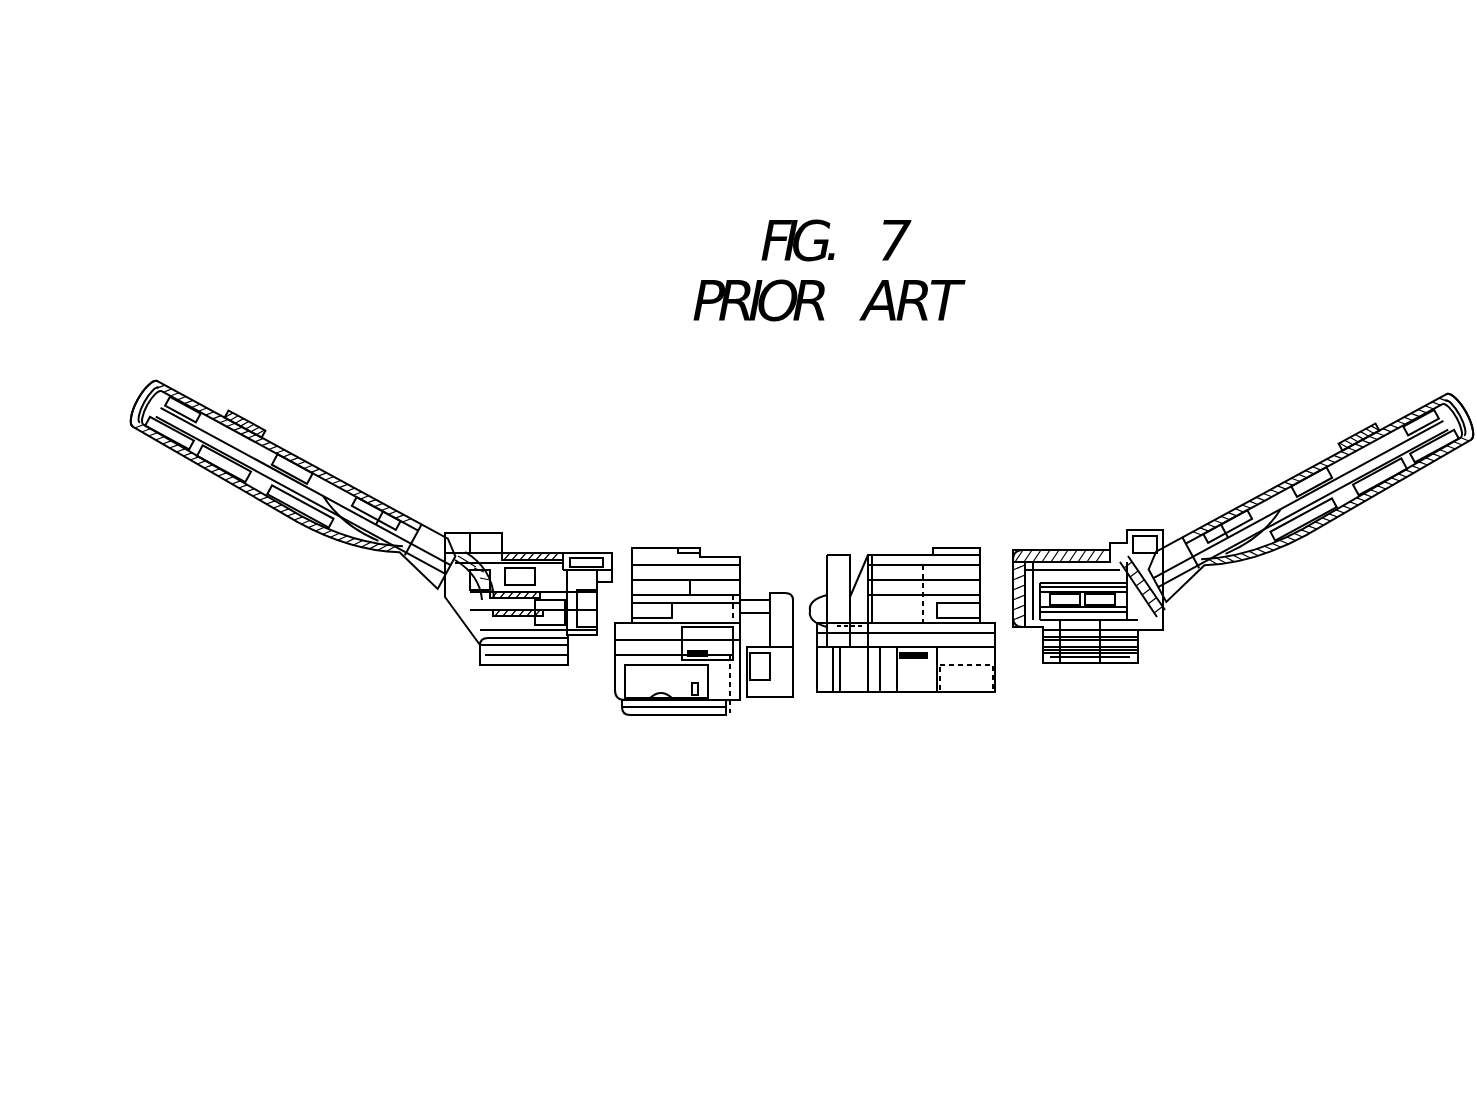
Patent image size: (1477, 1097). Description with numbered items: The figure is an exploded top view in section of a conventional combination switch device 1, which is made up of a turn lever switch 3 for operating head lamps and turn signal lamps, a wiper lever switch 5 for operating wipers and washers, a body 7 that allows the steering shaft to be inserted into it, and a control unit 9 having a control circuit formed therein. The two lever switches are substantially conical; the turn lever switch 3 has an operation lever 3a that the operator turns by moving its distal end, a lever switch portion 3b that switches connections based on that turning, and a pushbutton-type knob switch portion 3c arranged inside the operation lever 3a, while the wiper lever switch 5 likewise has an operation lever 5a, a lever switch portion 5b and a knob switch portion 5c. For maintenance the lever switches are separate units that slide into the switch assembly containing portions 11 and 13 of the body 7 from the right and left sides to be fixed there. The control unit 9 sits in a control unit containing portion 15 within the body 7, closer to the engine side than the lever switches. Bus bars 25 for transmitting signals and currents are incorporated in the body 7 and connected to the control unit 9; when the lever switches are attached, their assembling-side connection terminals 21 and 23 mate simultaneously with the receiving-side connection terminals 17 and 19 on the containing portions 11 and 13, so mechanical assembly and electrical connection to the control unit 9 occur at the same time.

The combination switch device 1 is at (775, 555).
The turn lever switch 3 is at (1310, 506).
The operation lever 3a is at (1406, 400).
The lever switch portion 3b is at (1105, 635).
The knob switch portion 3c is at (1357, 435).
The wiper lever switch 5 is at (292, 498).
The operation lever 5a is at (156, 384).
The lever switch portion 5b is at (470, 636).
The knob switch portion 5c is at (268, 430).
The body 7 is at (955, 553).
The control unit 9 is at (640, 715).
The switch assembly containing portion 11 is at (900, 565).
The switch assembly containing portion 13 is at (650, 570).
The control unit containing portion 15 is at (630, 675).
The receiving-side connection terminal 17 is at (905, 690).
The receiving-side connection terminal 19 is at (700, 650).
The assembling-side connection terminal 21 is at (1060, 665).
The assembling-side connection terminal 23 is at (547, 658).
The bus bars 25 is at (820, 600).